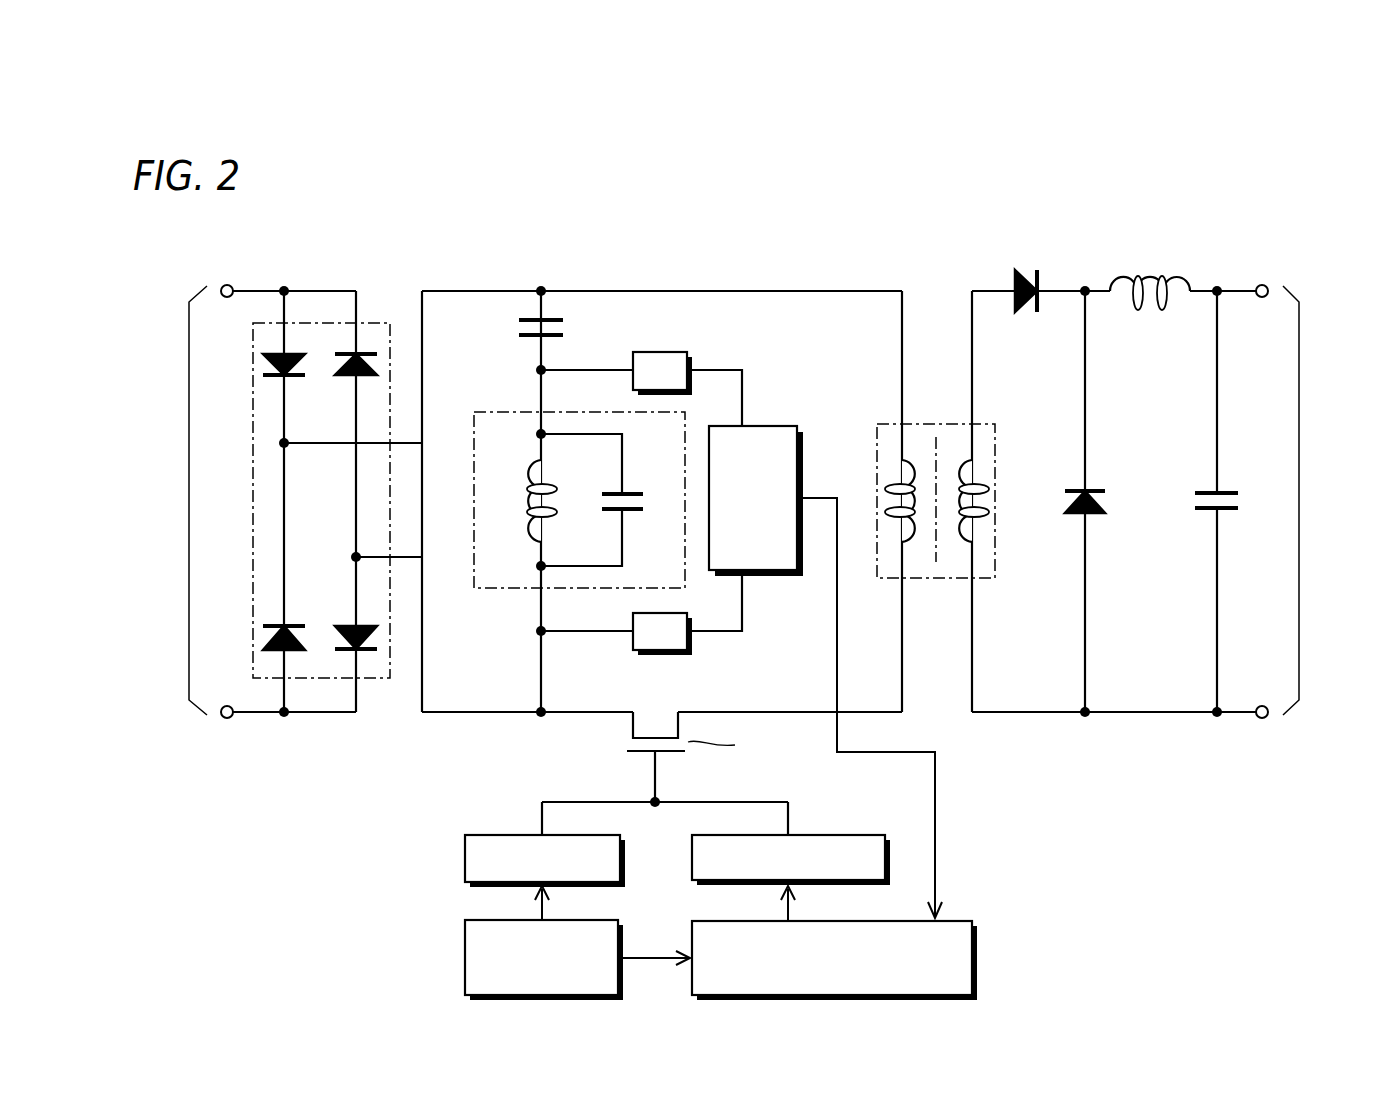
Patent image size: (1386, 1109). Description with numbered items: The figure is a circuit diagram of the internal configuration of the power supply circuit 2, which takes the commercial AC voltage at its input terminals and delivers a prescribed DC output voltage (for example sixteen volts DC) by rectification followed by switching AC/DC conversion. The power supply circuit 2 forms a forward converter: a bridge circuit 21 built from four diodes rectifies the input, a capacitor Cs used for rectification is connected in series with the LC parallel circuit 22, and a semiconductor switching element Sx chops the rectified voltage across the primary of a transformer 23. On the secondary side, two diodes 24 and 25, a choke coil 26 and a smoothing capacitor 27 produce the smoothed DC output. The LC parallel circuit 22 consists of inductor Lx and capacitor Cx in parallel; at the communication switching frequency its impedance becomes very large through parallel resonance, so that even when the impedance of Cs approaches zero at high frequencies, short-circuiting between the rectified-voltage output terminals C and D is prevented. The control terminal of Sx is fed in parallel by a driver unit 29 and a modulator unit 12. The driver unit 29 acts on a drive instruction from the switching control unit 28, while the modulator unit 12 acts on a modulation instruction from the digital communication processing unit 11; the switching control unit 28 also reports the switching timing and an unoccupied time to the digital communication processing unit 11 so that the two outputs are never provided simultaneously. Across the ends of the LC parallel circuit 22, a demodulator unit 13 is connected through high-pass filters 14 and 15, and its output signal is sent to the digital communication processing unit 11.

The power supply circuit 2 is at (813, 243).
The digital communication processing unit 11 is at (980, 955).
The modulator unit 12 is at (832, 835).
The demodulator unit 13 is at (800, 430).
The high-pass filter 14 is at (660, 352).
The high-pass filter 15 is at (685, 652).
The bridge circuit 21 is at (375, 323).
The LC parallel circuit 22 is at (500, 412).
The transformer 23 is at (935, 424).
The diode 24 is at (1025, 272).
The diode 25 is at (1095, 512).
The choke coil 26 is at (1150, 272).
The smoothing capacitor 27 is at (1228, 490).
The switching control unit 28 is at (462, 955).
The driver unit 29 is at (515, 835).